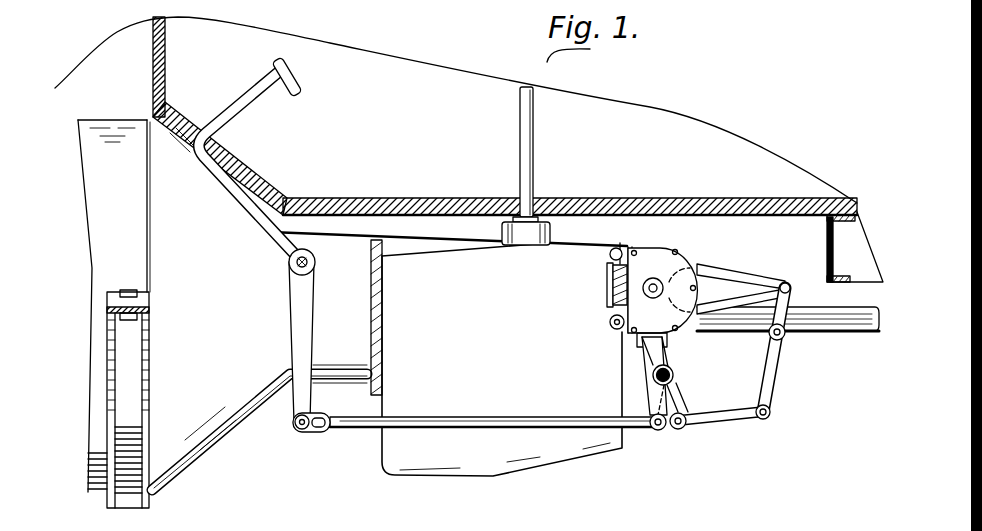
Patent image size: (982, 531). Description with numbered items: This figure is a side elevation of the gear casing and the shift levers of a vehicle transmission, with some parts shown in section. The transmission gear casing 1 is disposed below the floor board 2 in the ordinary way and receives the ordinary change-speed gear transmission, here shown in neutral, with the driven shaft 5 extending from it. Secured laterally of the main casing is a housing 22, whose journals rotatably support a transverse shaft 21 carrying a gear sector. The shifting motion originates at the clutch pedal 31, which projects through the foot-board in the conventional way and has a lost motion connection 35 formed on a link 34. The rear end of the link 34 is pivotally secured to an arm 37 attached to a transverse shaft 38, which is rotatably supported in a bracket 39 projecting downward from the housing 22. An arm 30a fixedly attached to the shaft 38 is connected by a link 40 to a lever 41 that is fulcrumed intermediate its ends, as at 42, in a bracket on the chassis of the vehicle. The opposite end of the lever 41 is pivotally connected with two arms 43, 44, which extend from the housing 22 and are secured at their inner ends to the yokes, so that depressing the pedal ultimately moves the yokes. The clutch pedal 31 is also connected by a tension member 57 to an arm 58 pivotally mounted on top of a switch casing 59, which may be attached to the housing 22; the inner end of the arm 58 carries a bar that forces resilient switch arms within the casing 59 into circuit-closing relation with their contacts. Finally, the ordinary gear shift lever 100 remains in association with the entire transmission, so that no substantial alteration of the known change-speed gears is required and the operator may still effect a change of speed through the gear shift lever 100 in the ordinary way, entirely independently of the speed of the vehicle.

The transmission gear casing 1 is at (378, 448).
The floor board 2 is at (372, 205).
The driven shaft 5 is at (878, 338).
The transverse shaft 21 is at (658, 278).
The housing 22 is at (686, 264).
The arm 30a is at (683, 427).
The clutch pedal 31 is at (231, 97).
The link 34 is at (472, 408).
The lost motion connection 35 is at (302, 431).
The arm 37 is at (650, 408).
The transverse shaft 38 is at (673, 378).
The bracket 39 is at (668, 352).
The link 40 is at (740, 424).
The lever 41 is at (770, 412).
The fulcrum 42 is at (778, 373).
The arm 43 is at (771, 281).
The arm 44 is at (743, 305).
The tension member 57 is at (425, 244).
The arm 58 is at (621, 247).
The switch casing 59 is at (608, 282).
The gear shift lever 100 is at (520, 110).